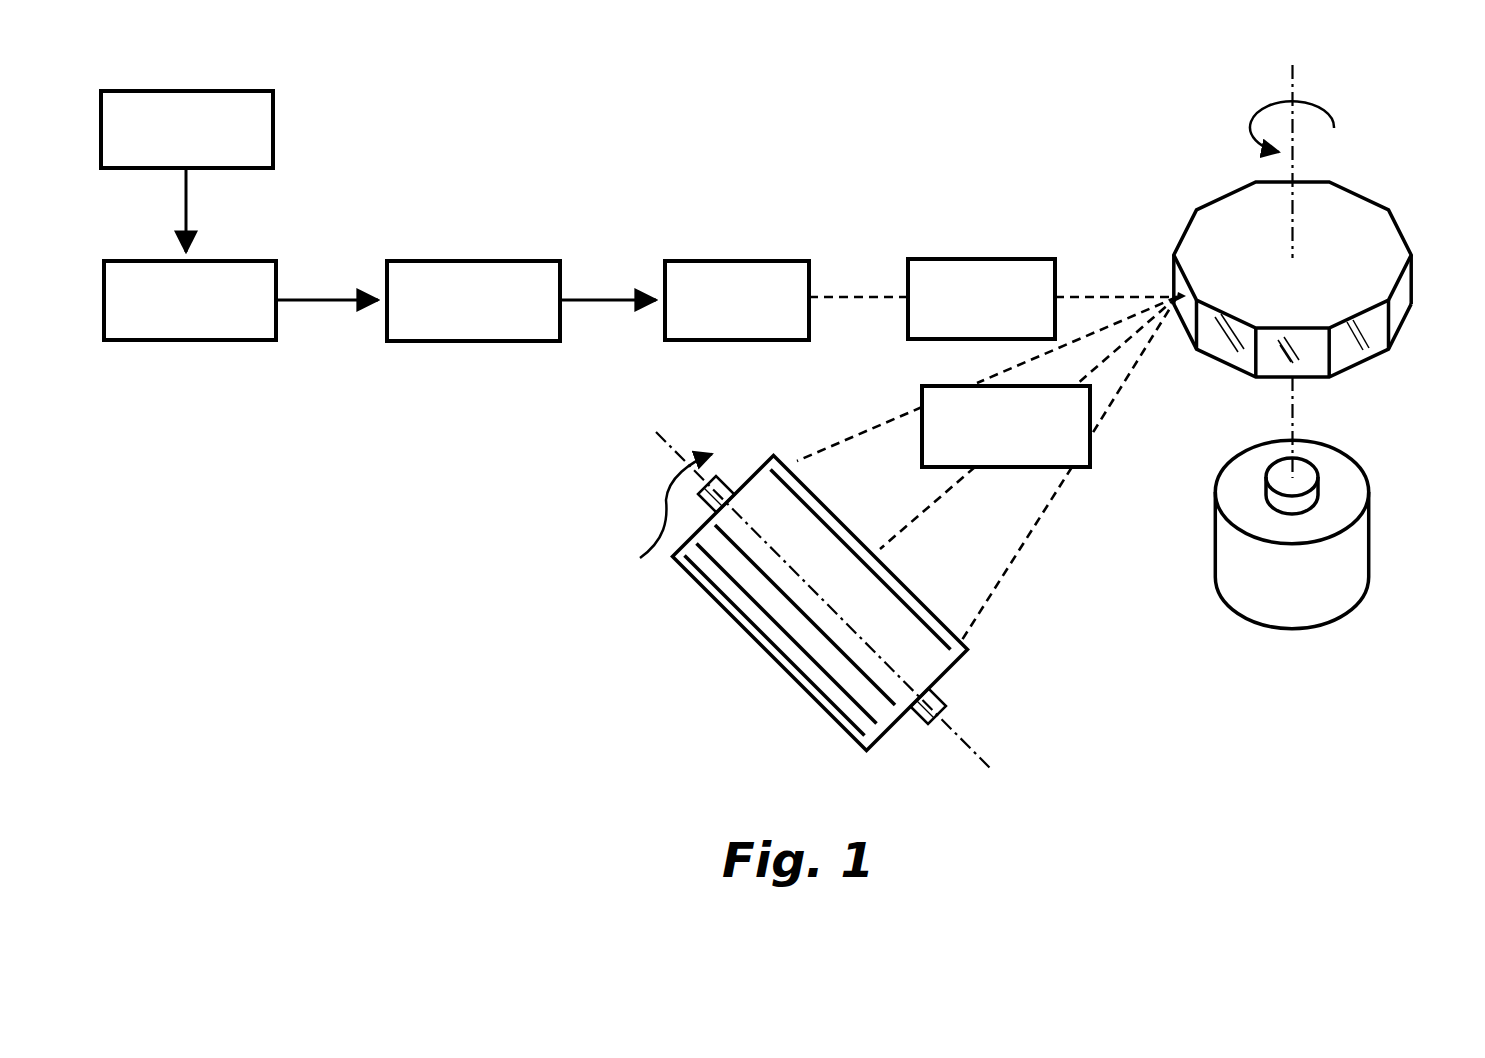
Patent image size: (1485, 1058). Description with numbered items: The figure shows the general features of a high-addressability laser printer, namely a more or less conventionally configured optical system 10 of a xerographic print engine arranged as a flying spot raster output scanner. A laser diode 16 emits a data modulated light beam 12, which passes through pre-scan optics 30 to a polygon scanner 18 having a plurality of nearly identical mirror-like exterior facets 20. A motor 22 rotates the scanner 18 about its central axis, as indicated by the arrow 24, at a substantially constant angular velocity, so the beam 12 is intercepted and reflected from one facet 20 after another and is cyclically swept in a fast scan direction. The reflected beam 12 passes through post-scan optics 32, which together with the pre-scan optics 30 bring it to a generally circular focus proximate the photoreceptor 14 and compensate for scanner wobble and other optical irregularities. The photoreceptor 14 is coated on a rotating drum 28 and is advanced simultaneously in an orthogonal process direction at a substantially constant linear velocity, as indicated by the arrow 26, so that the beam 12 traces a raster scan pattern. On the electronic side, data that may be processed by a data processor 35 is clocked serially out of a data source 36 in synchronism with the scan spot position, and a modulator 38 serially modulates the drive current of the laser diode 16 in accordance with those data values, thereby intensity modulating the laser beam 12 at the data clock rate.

The optical system 10 is at (386, 605).
The light beam 12 is at (897, 416).
The photoreceptor 14 is at (752, 624).
The laser diode 16 is at (742, 262).
The polygon scanner 18 is at (1350, 217).
The facets 20 is at (1363, 340).
The motor 22 is at (1337, 470).
The arrow 24 is at (1323, 107).
The arrow 26 is at (656, 516).
The rotating drum 28 is at (952, 672).
The pre-scan optics 30 is at (996, 259).
The post-scan optics 32 is at (1038, 457).
The data processor 35 is at (223, 91).
The data source 36 is at (238, 262).
The modulator 38 is at (481, 262).